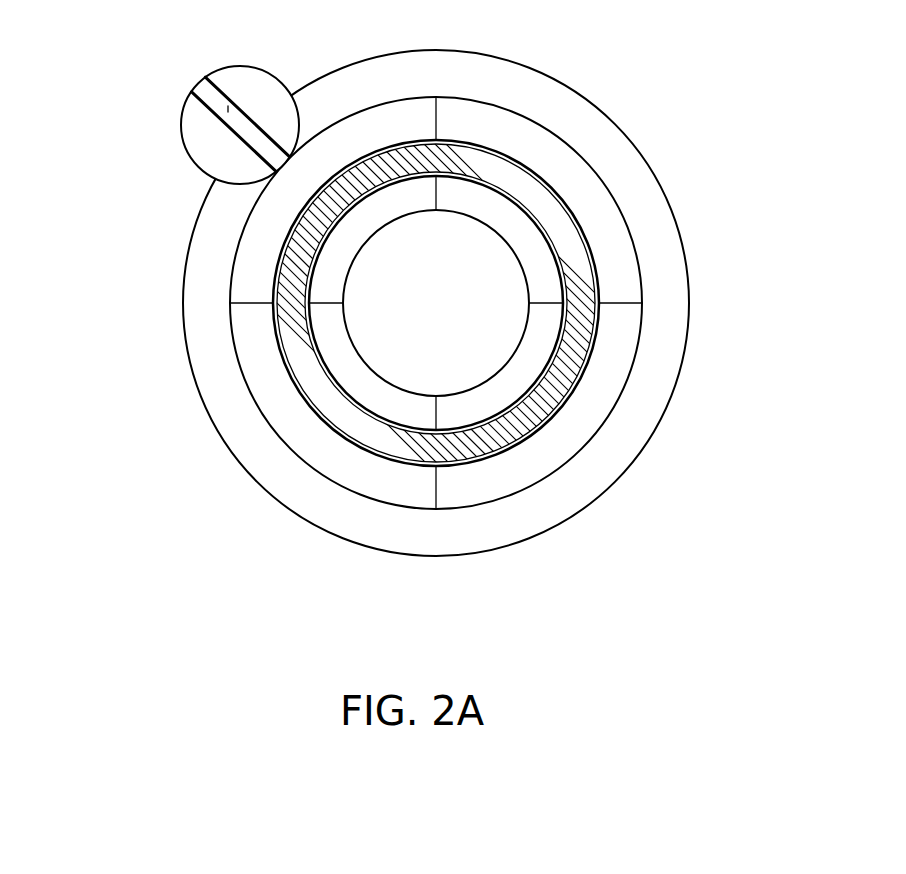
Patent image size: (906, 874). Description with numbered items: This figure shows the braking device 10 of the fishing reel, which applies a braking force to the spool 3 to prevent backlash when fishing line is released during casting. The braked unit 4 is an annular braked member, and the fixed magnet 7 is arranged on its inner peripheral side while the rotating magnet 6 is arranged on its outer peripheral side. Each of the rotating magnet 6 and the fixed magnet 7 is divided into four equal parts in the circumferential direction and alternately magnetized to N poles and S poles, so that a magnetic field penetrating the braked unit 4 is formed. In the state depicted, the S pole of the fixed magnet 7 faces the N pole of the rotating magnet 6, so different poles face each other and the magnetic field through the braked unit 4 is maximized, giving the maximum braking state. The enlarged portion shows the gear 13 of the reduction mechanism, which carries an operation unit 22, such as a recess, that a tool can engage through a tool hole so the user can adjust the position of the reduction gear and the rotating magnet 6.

The braking device 10 is at (657, 70).
The spool 3 is at (620, 455).
The braked unit 4 is at (590, 310).
The rotating magnet 6 is at (253, 282).
The fixed magnet 7 is at (337, 345).
The gear 13 is at (202, 118).
The operation unit 22 is at (228, 98).